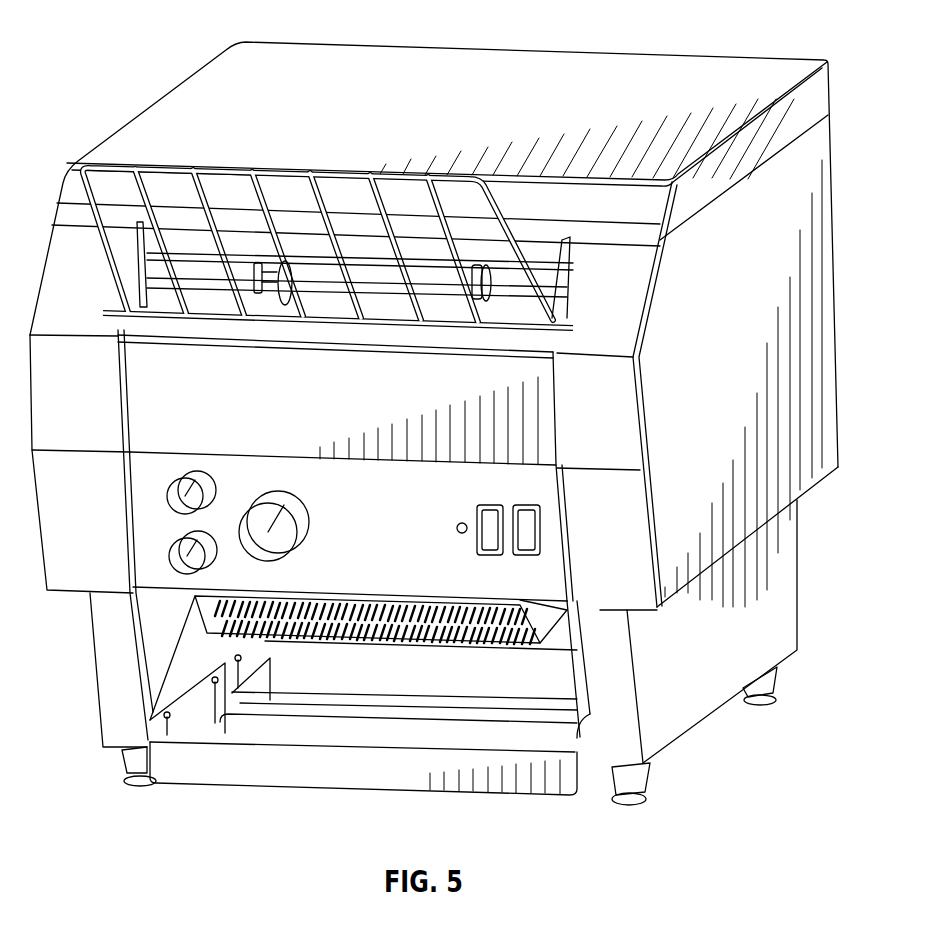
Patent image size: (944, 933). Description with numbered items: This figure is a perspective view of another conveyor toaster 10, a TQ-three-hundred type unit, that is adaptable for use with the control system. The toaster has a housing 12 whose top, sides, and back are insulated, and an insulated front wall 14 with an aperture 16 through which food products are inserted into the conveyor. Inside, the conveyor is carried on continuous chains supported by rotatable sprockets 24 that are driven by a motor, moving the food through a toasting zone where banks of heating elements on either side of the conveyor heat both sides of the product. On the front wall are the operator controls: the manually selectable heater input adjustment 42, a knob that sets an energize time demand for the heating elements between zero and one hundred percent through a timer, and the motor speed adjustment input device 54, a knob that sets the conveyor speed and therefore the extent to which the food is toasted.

The conveyor toaster 10 is at (816, 30).
The housing 12 is at (810, 180).
The insulated front wall 14 is at (150, 397).
The aperture 16 is at (187, 267).
The rotatable sprockets 24 is at (287, 306).
The heater input adjustment 42 is at (172, 499).
The motor speed adjustment input device 54 is at (283, 520).